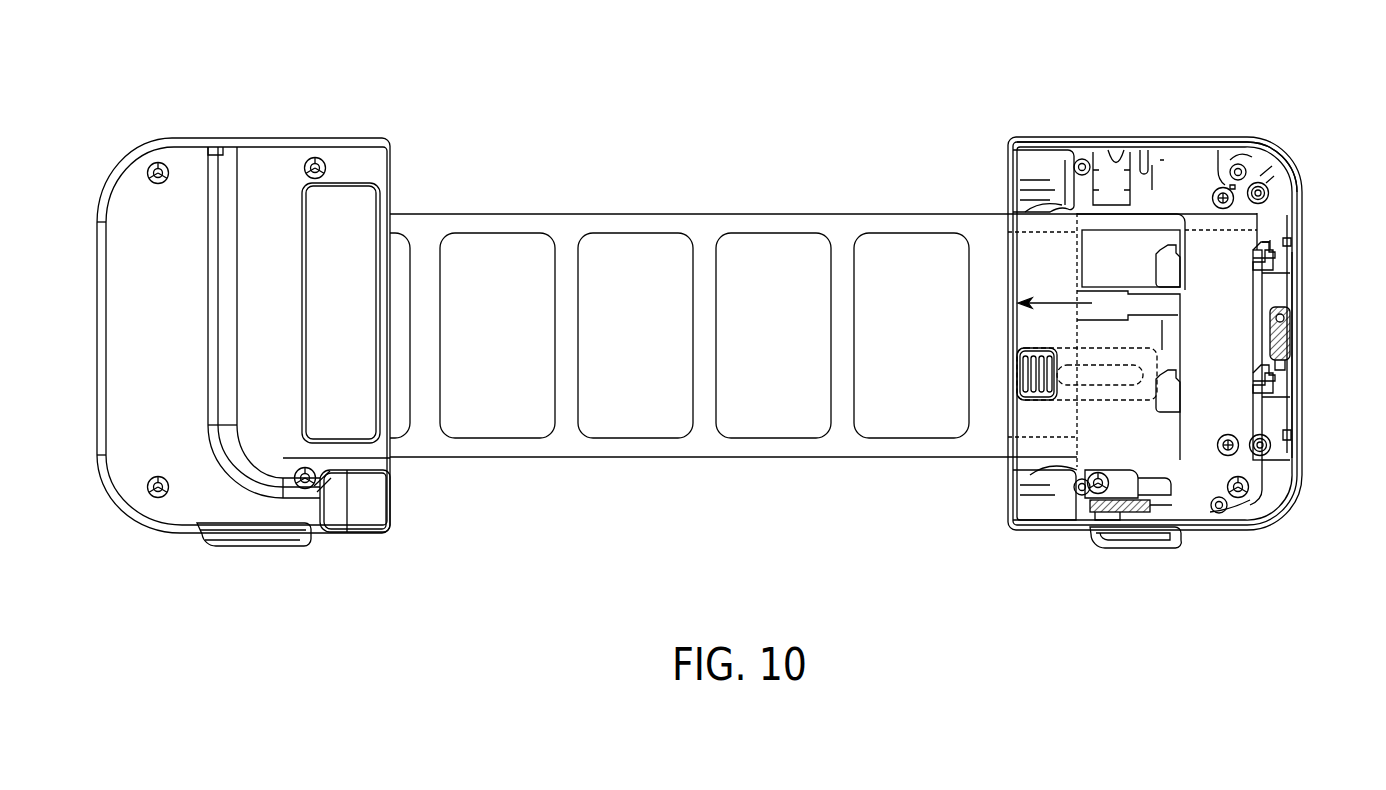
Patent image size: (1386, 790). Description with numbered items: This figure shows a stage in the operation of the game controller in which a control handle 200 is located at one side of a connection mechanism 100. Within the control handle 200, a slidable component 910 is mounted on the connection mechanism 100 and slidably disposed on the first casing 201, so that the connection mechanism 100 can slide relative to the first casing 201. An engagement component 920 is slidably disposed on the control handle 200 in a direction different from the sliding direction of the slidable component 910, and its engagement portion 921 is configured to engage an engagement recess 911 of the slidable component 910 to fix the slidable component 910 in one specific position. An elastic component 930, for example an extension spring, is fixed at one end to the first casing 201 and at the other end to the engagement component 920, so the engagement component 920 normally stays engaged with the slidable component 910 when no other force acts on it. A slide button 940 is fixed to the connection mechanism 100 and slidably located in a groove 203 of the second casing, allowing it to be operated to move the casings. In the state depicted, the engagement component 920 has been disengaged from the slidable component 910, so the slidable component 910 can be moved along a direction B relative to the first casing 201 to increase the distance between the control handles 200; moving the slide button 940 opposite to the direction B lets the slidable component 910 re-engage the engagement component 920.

The control handle 200 is at (132, 136).
The connection mechanism 100 is at (707, 222).
The first casing 201 is at (1240, 132).
The groove 203 is at (1095, 368).
The slidable component 910 is at (1140, 246).
The engagement recess 911 is at (1168, 266).
The engagement component 920 is at (1305, 262).
The engagement portion 921 is at (1272, 263).
The elastic component 930 is at (1290, 343).
The slide button 940 is at (1033, 382).
The direction B is at (1052, 303).